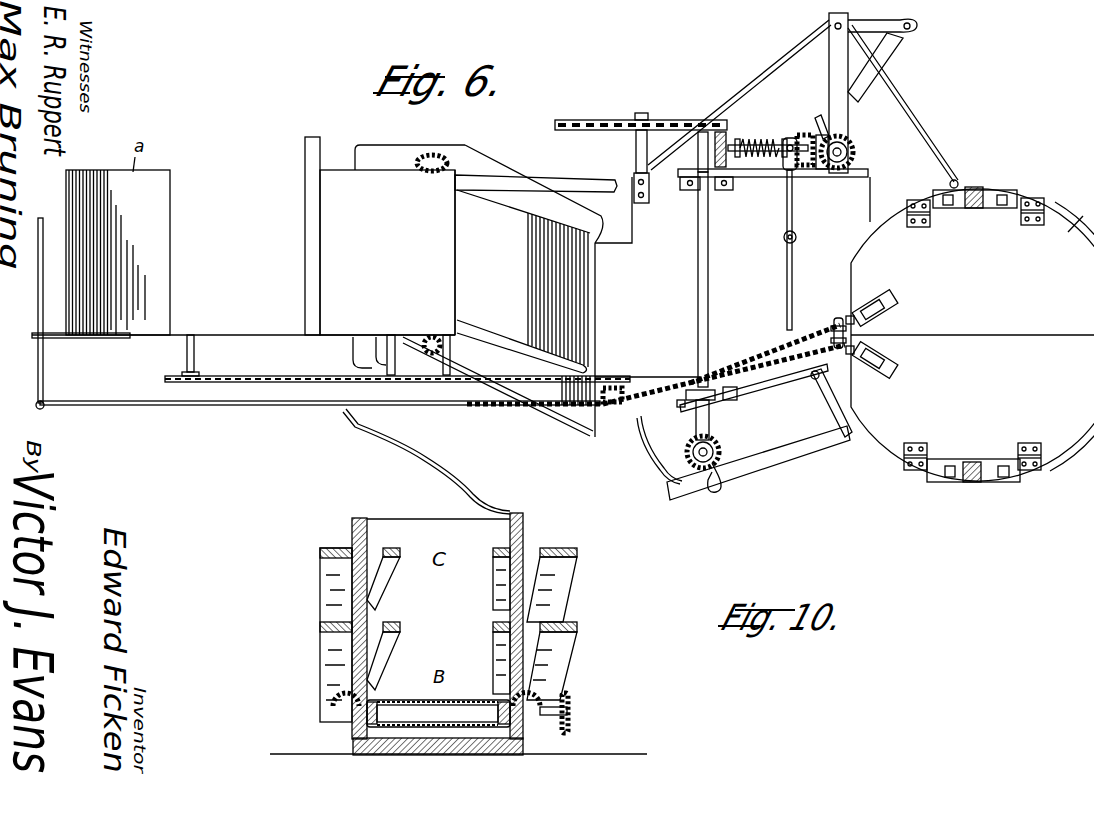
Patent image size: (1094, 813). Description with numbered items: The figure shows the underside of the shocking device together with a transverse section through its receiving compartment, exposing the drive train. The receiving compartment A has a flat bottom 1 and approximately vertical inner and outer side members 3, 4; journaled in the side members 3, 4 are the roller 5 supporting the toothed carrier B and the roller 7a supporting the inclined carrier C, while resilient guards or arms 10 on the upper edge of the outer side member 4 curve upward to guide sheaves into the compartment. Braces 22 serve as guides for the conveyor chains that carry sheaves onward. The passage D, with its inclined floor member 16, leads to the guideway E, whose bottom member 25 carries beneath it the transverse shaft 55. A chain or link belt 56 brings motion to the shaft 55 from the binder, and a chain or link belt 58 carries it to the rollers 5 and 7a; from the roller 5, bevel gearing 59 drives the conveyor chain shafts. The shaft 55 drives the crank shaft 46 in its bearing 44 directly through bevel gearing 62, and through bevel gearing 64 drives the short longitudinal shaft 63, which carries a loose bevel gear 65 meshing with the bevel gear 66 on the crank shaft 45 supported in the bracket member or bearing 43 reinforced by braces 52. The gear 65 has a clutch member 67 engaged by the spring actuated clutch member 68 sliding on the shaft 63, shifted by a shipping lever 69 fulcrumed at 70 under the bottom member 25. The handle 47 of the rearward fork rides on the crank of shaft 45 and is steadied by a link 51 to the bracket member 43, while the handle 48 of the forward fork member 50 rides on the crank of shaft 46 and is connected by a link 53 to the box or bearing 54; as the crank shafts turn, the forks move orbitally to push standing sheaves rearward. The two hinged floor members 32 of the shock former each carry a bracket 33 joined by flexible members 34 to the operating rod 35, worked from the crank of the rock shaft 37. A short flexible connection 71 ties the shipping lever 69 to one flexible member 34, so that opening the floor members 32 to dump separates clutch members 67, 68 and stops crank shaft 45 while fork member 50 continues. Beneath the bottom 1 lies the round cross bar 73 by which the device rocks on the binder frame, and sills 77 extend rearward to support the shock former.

In FIG. 6, the flat bottom 1 is at (152, 252).
In FIG. 6, the cross bar 73 is at (314, 256).
In FIG. 6, the chain or link belt 58 is at (295, 382).
In FIG. 6, the operating rod 35 is at (200, 407).
In FIG. 6, the rock shaft 37 is at (37, 288).
In FIG. 6, the inclined floor member 16 is at (529, 291).
In FIG. 6, the frame members or sills 77 is at (569, 180).
In FIG. 6, the guards or arms 10 is at (418, 448).
In FIG. 6, the chain or link belt 56 is at (641, 142).
In FIG. 6, the bearing or bracket member 43 is at (832, 43).
In FIG. 6, the link 51 is at (905, 28).
In FIG. 6, the handle 47 is at (887, 50).
In FIG. 6, the braces 52 is at (933, 142).
In FIG. 6, the bevel gearing 64 is at (722, 140).
In FIG. 6, the roller 7a is at (772, 177).
In FIG. 6, the short longitudinal shaft 63 is at (760, 140).
In FIG. 6, the spring actuated clutch member 68 is at (776, 140).
In FIG. 6, the clutch member 67 is at (797, 135).
In FIG. 6, the shipping lever 69 is at (786, 220).
In FIG. 6, the loose bevel gear 65 is at (822, 170).
In FIG. 6, the bevel gear 66 is at (857, 151).
In FIG. 6, the crank shaft 45 is at (848, 143).
In FIG. 6, the shaft 55 is at (709, 273).
In FIG. 6, the bottom member 25 is at (732, 277).
In FIG. 6, the short flexible connection 71 is at (776, 333).
In FIG. 6, the flexible members 34 is at (813, 330).
In FIG. 6, the bearing 44 is at (714, 411).
In FIG. 6, the bevel gearing 62 is at (721, 445).
In FIG. 6, the crank shaft 46 is at (707, 470).
In FIG. 6, the handle 48 is at (770, 462).
In FIG. 6, the link 53 is at (820, 442).
In FIG. 6, the box or bearing 54 is at (811, 380).
In FIG. 6, the fork member 50 is at (642, 440).
In FIG. 6, the floor members 32 is at (893, 466).
In FIG. 6, the fulcrum 70 is at (797, 237).
In FIG. 6, the bracket 33 is at (872, 302).
In FIG. 10, the inner side member 3 is at (351, 527).
In FIG. 10, the outer side member 4 is at (526, 533).
In FIG. 10, the braces 22 is at (320, 609).
In FIG. 10, the roller 5 is at (398, 706).
In FIG. 10, the bevel gearing 59 is at (340, 722).